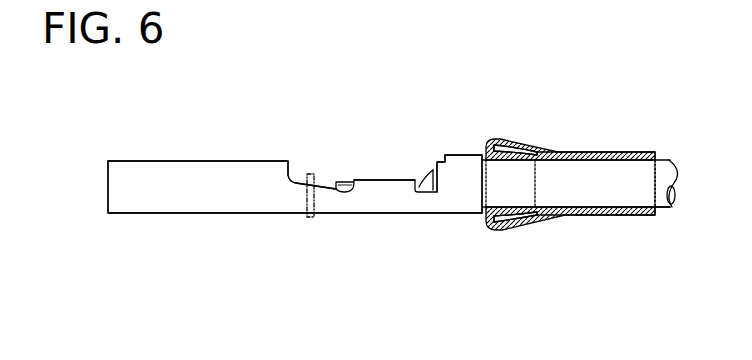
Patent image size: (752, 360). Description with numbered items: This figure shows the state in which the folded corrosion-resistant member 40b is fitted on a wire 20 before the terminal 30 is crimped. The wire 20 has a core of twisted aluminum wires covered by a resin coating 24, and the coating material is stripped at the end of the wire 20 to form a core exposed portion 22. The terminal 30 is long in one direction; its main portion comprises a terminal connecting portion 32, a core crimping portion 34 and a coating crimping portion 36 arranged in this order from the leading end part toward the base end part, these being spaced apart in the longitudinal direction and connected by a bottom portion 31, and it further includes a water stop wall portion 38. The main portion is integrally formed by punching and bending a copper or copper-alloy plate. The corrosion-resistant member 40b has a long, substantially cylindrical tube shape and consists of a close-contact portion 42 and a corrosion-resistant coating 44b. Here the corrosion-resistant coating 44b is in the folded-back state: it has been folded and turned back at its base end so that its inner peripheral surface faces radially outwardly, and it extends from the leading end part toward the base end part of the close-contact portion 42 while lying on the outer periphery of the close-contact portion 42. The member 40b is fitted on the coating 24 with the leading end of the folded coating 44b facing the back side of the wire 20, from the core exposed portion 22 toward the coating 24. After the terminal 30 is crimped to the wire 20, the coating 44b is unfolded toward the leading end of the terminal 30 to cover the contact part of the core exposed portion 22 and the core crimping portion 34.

The wire 20 is at (662, 156).
The core exposed portion 22 is at (343, 180).
The coating 24 is at (635, 198).
The terminal 30 is at (109, 161).
The bottom portion 31 is at (218, 214).
The terminal connecting portion 32 is at (200, 165).
The core crimping portion 34 is at (372, 185).
The coating crimping portion 36 is at (459, 158).
The water stop wall portion 38 is at (306, 199).
The corrosion-resistant member in folded-back state 40b is at (562, 139).
The close-contact portion 42 is at (508, 150).
The corrosion-resistant coating in folded-back state 44b is at (608, 151).